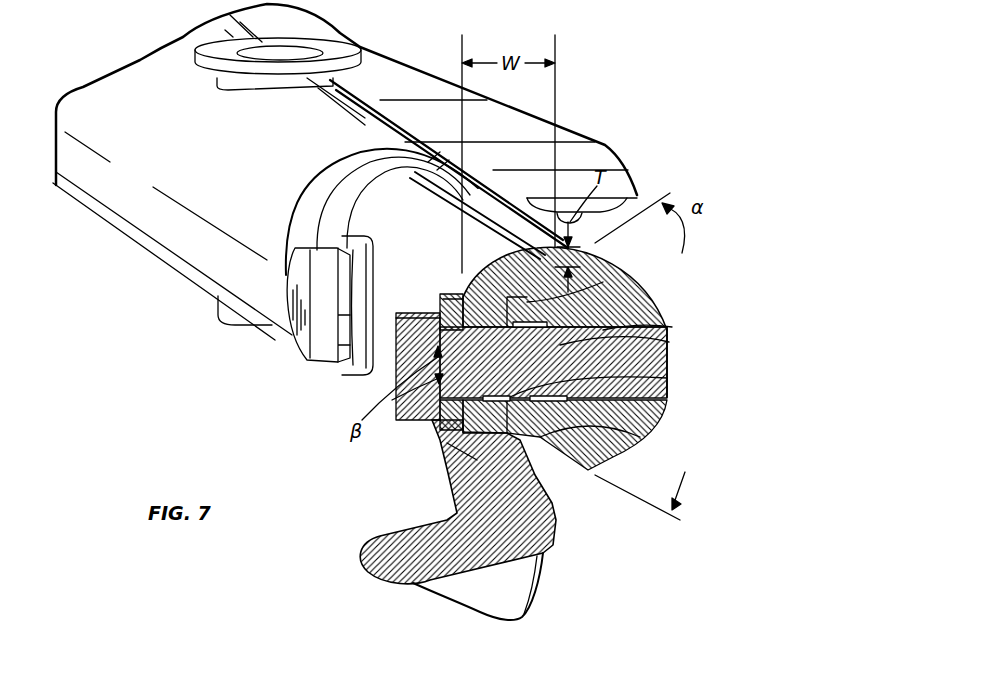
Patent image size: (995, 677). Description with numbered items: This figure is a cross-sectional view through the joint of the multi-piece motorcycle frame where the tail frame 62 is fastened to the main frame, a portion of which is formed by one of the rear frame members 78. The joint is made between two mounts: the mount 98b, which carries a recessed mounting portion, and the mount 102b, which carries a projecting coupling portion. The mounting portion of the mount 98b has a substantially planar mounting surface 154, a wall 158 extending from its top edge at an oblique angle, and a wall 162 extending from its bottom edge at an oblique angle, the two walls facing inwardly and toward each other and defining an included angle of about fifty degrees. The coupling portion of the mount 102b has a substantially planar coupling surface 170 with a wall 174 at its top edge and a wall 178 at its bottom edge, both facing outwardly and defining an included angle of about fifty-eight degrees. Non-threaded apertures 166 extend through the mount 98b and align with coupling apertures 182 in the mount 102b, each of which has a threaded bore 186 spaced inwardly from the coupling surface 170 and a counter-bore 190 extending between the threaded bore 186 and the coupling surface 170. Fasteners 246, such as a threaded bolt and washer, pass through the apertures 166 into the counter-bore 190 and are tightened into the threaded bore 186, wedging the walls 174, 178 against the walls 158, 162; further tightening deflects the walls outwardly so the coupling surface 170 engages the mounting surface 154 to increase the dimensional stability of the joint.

The tail frame 62 is at (130, 190).
The mount 102b is at (405, 153).
The wall 174 is at (502, 200).
The mount 98b is at (395, 287).
The fasteners 246 is at (295, 338).
The coupling surface 170 is at (467, 300).
The wall 158 is at (603, 282).
The threaded bore 186 is at (672, 327).
The coupling apertures 182 is at (669, 342).
The counter-bore 190 is at (668, 360).
The apertures 166 is at (672, 379).
The mounting surface 154 is at (640, 416).
The wall 162 is at (600, 437).
The wall 178 is at (553, 492).
The rear frame members 78 is at (512, 587).